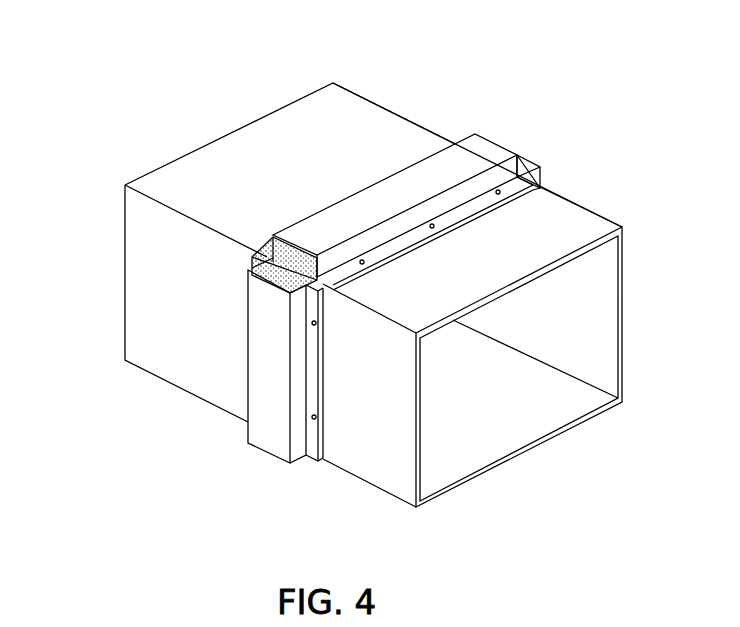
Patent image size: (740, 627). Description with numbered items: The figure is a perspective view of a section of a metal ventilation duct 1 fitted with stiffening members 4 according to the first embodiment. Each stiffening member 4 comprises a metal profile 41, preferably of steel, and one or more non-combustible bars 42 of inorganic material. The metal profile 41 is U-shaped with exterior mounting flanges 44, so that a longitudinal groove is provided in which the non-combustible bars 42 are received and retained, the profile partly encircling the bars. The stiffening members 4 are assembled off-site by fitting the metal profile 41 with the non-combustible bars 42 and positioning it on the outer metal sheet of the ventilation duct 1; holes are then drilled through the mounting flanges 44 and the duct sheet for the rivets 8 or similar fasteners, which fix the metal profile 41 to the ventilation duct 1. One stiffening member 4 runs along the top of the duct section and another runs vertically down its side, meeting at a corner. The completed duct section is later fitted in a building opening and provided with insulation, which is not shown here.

The ventilation duct 1 is at (533, 184).
The stiffening member 4 is at (320, 293).
The metal profile 41 is at (440, 172).
The non-combustible bar 42 is at (253, 273).
The mounting flange 44 is at (580, 228).
The rivet 8 is at (318, 323).